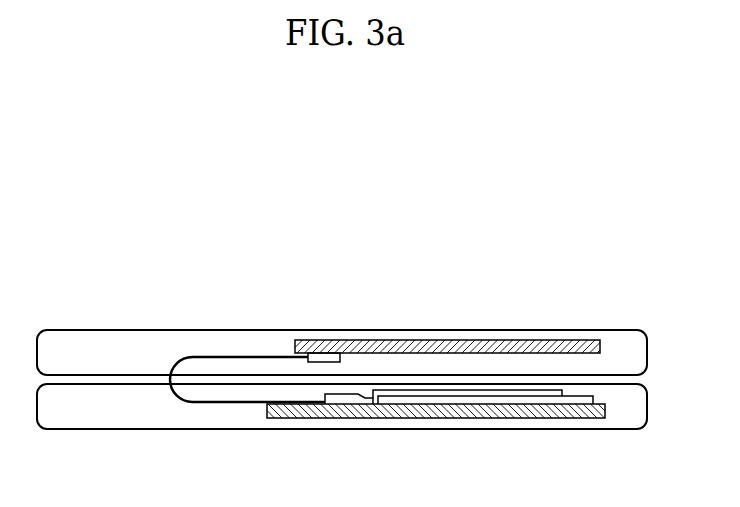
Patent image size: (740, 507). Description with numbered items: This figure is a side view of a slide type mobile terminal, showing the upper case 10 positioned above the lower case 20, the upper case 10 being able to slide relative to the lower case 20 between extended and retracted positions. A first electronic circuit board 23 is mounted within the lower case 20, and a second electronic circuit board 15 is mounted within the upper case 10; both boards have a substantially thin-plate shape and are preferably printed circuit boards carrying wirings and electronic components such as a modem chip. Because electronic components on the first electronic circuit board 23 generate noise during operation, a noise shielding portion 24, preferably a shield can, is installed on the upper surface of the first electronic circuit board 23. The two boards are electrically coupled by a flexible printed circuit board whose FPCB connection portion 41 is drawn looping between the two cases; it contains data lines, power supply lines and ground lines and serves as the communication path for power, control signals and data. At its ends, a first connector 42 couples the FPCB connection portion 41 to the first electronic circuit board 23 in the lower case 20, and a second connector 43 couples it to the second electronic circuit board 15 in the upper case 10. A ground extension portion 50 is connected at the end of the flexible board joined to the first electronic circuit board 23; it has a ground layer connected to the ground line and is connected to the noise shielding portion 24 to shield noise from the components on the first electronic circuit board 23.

The upper case 10 is at (632, 352).
The lower case 20 is at (632, 408).
The second electronic circuit board 15 is at (543, 348).
The second connector 43 is at (322, 357).
The FPCB connection portion 41 is at (203, 403).
The first connector 42 is at (343, 400).
The ground extension portion 50 is at (475, 393).
The noise shielding portion 24 is at (528, 399).
The first electronic circuit board 23 is at (578, 406).